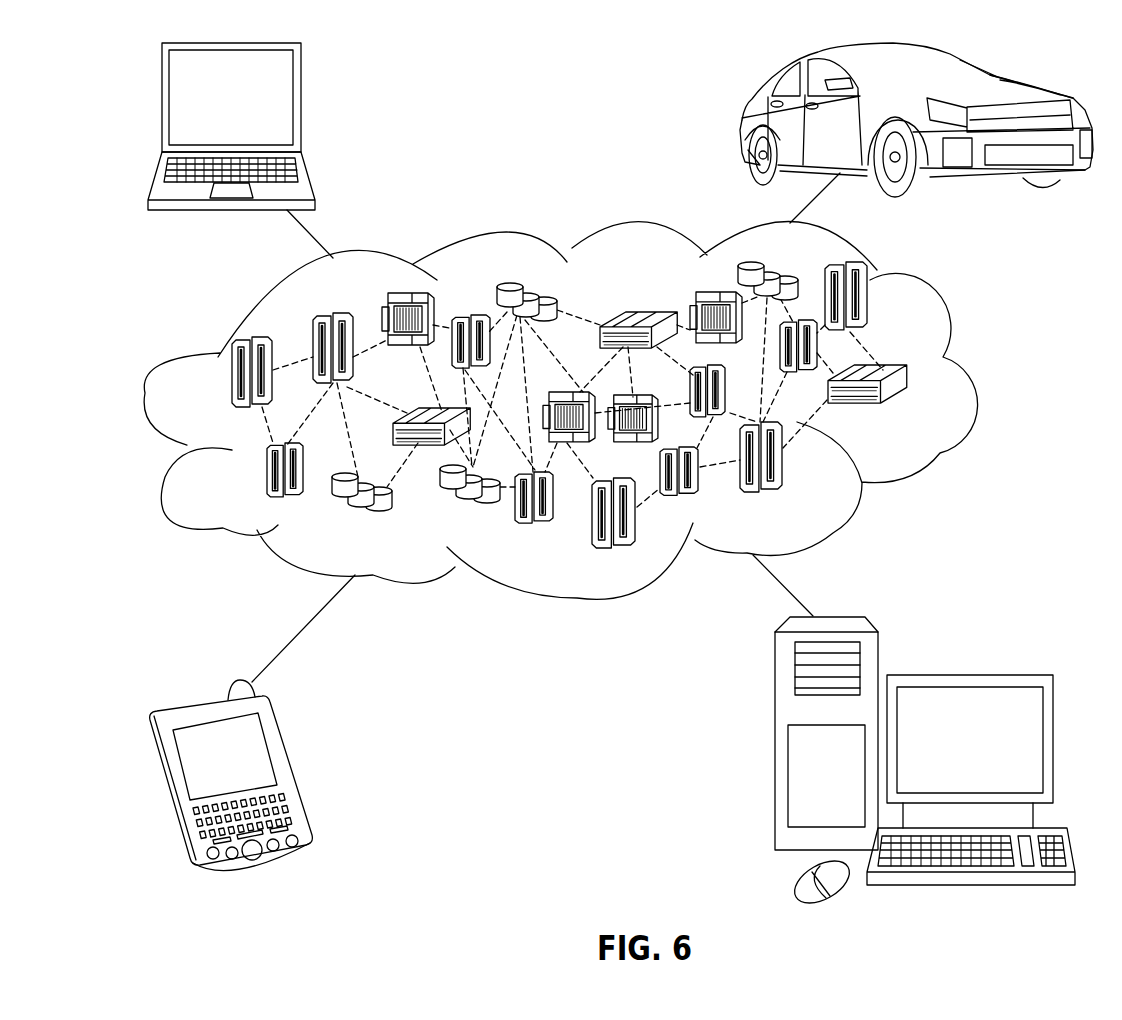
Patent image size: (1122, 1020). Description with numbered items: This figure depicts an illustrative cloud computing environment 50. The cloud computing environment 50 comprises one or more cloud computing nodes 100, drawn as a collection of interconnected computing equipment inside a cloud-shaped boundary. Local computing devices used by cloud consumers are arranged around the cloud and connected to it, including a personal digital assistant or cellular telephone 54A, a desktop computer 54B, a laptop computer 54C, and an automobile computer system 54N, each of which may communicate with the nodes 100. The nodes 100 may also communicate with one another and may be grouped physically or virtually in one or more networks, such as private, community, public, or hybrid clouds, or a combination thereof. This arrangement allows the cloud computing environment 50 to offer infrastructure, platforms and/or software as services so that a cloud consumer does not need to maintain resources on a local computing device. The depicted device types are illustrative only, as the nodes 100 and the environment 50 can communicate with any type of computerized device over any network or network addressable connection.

The cloud computing environment 50 is at (585, 427).
The cloud computing nodes 100 is at (912, 414).
The personal digital assistant (PDA) or cellular telephone 54A is at (290, 770).
The desktop computer 54B is at (967, 674).
The laptop computer 54C is at (301, 105).
The automobile computer system 54N is at (745, 123).